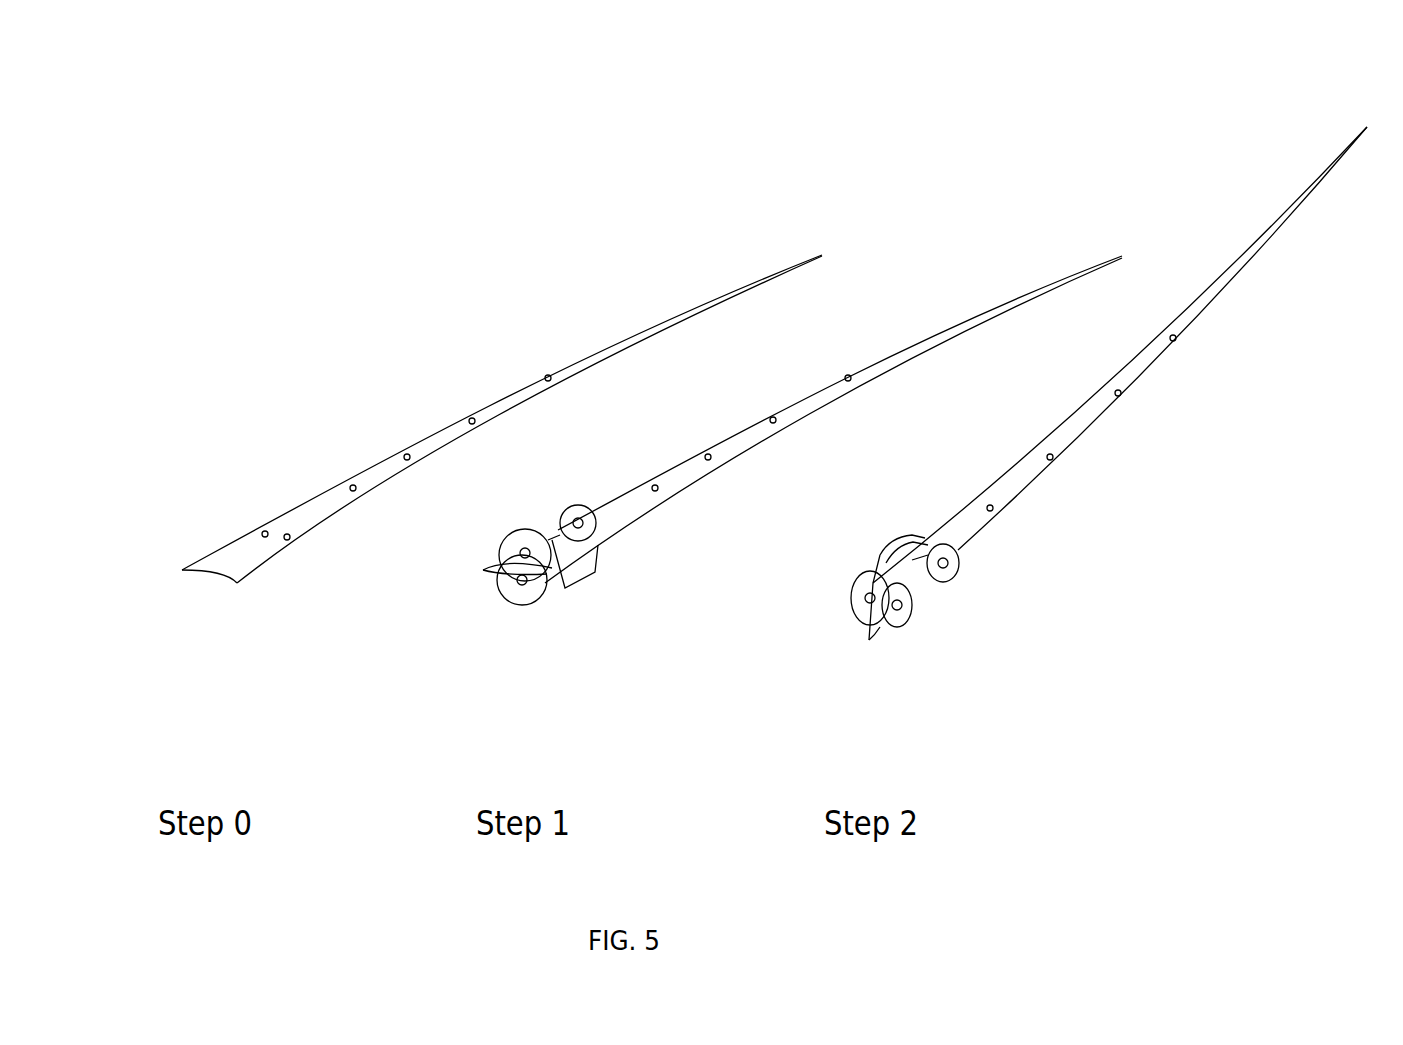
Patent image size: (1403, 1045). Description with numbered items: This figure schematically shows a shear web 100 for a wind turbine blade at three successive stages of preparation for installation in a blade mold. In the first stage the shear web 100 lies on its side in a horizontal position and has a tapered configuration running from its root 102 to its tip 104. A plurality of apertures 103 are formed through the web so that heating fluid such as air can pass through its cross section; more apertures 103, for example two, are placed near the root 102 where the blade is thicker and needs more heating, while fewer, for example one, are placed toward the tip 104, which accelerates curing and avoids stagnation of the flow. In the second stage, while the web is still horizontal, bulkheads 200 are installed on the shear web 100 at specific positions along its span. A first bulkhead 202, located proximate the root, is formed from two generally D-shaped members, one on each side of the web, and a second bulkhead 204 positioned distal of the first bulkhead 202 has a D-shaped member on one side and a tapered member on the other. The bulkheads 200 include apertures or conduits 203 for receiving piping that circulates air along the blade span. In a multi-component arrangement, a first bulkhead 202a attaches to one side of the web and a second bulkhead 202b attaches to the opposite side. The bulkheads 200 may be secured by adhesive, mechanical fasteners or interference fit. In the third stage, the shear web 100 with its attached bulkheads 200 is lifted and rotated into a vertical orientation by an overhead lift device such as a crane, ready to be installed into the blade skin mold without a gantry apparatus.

The shear web 100 is at (478, 305).
The root 102 is at (193, 547).
The apertures 103 is at (272, 527).
The tip 104 is at (779, 249).
The bulkheads 200 is at (875, 569).
The first bulkhead 202 is at (557, 584).
The first bulkhead 202a is at (846, 582).
The second bulkhead 202b is at (917, 617).
The apertures or conduits 203 is at (567, 518).
The second bulkhead 204 is at (608, 546).